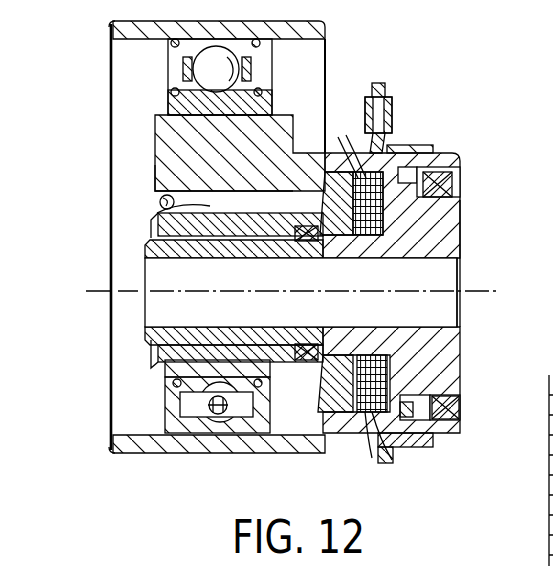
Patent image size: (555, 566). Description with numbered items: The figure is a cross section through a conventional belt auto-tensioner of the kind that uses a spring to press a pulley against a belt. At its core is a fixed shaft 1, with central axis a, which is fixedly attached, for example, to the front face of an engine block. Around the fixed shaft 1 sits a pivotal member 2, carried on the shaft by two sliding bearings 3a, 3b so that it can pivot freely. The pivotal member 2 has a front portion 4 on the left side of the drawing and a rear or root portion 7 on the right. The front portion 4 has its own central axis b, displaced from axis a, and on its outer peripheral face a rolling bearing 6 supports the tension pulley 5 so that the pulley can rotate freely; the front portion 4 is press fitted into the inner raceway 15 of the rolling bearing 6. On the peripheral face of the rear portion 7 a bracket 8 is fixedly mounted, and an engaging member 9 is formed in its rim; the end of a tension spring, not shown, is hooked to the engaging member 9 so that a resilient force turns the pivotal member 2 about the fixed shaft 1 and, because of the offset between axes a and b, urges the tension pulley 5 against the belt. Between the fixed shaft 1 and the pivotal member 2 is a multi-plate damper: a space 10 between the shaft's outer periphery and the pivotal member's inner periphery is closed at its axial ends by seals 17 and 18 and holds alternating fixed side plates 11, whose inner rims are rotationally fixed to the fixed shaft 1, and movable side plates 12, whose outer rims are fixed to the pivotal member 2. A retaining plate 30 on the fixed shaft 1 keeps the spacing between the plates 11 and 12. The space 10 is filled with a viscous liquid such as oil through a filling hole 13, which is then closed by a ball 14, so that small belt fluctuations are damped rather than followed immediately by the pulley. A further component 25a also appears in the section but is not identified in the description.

The fixed shaft 1 is at (464, 222).
The pivotal member 2 is at (163, 141).
The sliding bearing 3a is at (150, 238).
The sliding bearing 3b is at (380, 204).
The front portion 4 is at (162, 172).
The tension pulley 5 is at (292, 24).
The rolling bearing 6 is at (200, 69).
The rear portion 7 is at (448, 435).
The bracket 8 is at (377, 83).
The engaging member 9 is at (393, 107).
The space 10 is at (353, 392).
The fixed side plates 11 is at (373, 175).
The movable side plates 12 is at (410, 478).
The filling hole 13 is at (154, 218).
The ball 14 is at (158, 201).
The inner raceway 15 is at (172, 103).
The seal 17 is at (462, 187).
The seal 18 is at (298, 372).
The bearing pin 25a is at (183, 405).
The retaining plate 30 is at (330, 400).
The central axis of fixed shaft a is at (478, 292).
The central axis of front portion b is at (478, 233).